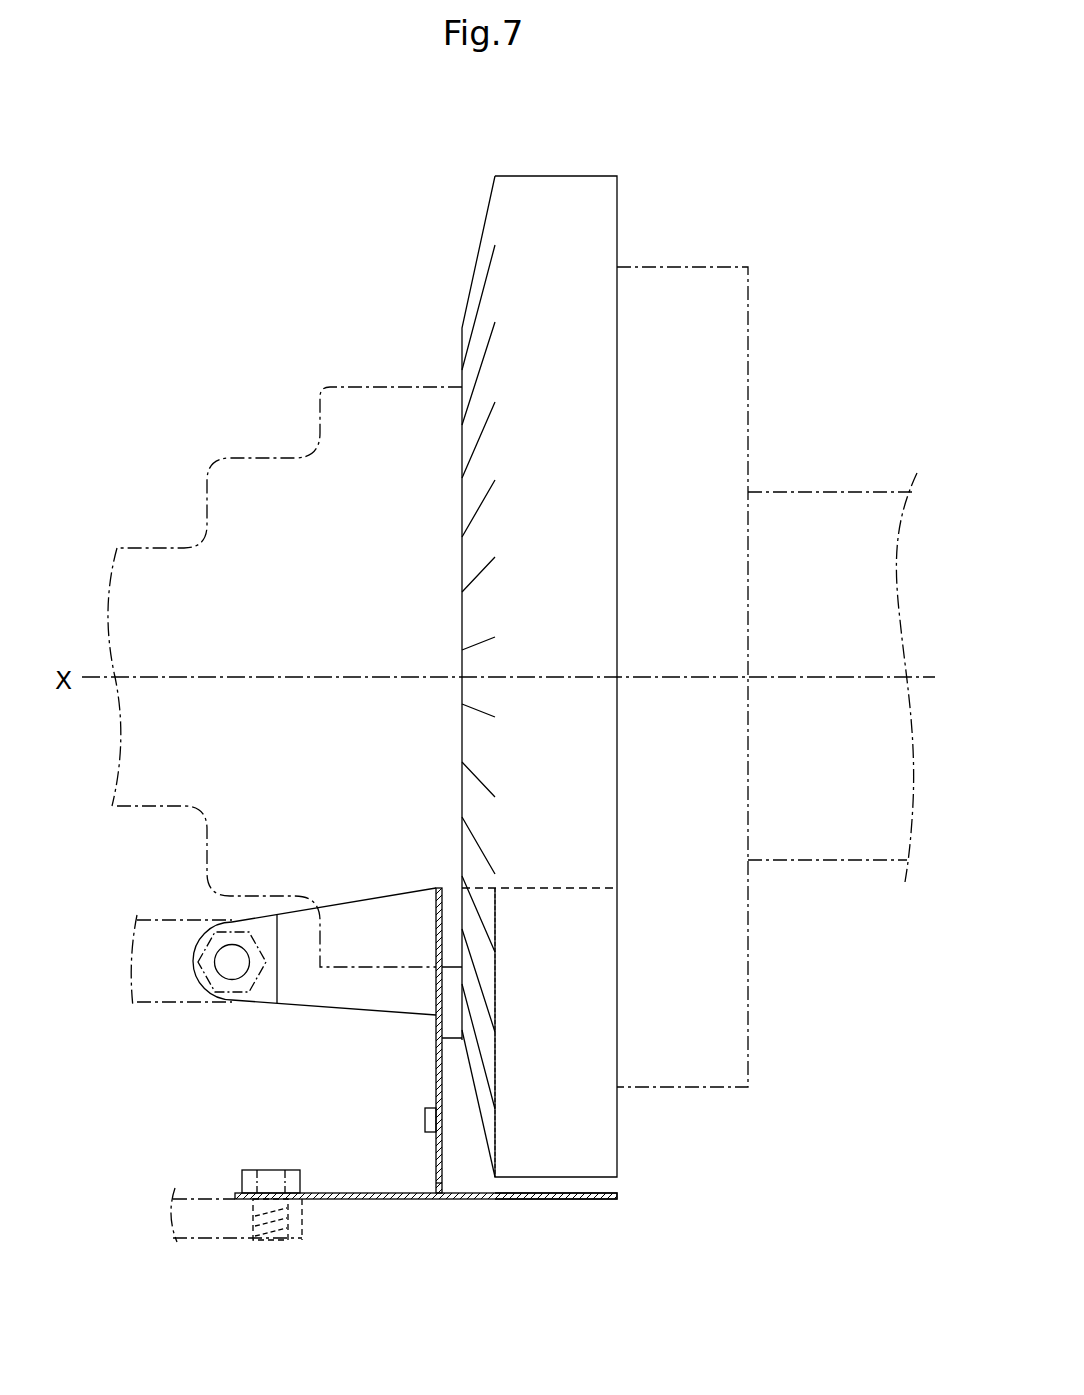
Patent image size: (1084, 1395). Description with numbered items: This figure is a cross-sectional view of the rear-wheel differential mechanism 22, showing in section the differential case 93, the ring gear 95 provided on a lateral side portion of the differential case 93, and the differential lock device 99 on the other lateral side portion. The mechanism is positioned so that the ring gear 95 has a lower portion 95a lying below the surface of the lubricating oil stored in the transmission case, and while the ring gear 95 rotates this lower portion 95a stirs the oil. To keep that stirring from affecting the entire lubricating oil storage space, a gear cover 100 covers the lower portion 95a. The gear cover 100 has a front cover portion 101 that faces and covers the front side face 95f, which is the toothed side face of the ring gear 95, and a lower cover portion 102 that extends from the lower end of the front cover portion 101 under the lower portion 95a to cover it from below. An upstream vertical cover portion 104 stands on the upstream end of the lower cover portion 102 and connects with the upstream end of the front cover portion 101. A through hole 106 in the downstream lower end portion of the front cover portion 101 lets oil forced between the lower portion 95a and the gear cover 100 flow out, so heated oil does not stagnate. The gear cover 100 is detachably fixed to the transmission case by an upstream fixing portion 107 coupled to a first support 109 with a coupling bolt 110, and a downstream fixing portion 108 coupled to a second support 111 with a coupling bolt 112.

The rear-wheel differential mechanism 22 is at (272, 187).
The differential case 93 is at (382, 385).
The ring gear 95 is at (553, 176).
The lower portion 95a is at (452, 955).
The front side face 95f is at (489, 1108).
The differential lock device 99 is at (736, 265).
The gear cover 100 is at (431, 1231).
The front cover portion 101 is at (435, 1028).
The lower cover portion 102 is at (563, 1200).
The upstream vertical cover portion 104 is at (555, 886).
The through hole 106 is at (427, 1182).
The upstream fixing portion 107 is at (267, 938).
The downstream fixing portion 108 is at (345, 1202).
The first support 109 is at (187, 918).
The coupling bolt 110 is at (230, 993).
The second support 111 is at (197, 1240).
The coupling bolt 112 is at (248, 1168).